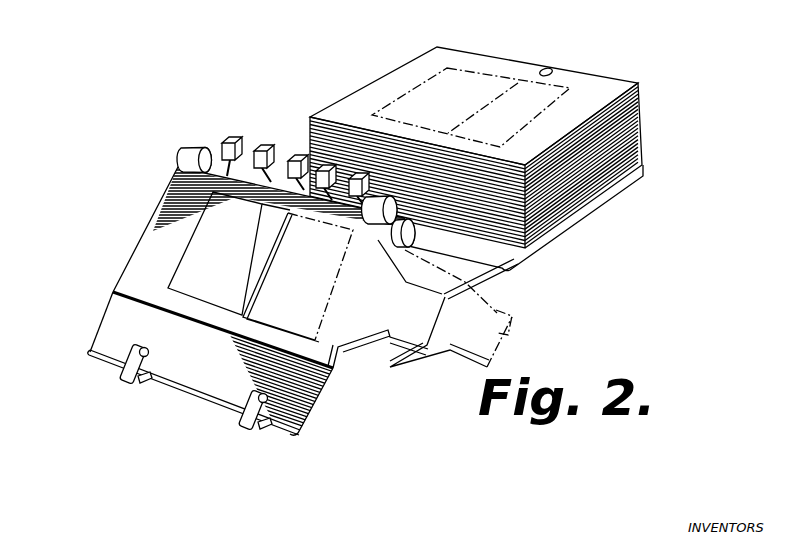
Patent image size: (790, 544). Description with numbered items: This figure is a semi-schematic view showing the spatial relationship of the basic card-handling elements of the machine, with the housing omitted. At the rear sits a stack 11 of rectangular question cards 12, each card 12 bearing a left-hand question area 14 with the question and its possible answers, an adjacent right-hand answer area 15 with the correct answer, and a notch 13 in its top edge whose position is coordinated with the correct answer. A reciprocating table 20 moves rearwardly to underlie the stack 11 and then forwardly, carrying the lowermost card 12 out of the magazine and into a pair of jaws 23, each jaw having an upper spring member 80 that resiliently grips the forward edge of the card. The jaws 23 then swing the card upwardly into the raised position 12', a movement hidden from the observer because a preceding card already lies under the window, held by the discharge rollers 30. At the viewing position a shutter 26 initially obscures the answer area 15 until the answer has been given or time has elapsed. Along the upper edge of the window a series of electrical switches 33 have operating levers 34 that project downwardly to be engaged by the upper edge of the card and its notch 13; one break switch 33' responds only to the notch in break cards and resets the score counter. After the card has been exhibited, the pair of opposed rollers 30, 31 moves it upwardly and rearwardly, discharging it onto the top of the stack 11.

The stack 11 is at (521, 58).
The card 12 is at (394, 261).
The card position 12' is at (194, 392).
The notch 13 is at (548, 69).
The question area 14 is at (463, 72).
The answer area 15 is at (562, 88).
The table 20 is at (521, 267).
The jaws 23 is at (114, 378).
The shutter 26 is at (430, 312).
The roller 30 is at (194, 148).
The roller 31 is at (403, 238).
The electrical switch 33 is at (309, 139).
The break switch 33' is at (218, 123).
The operating lever 34 is at (270, 168).
The upper spring member 80 is at (118, 352).